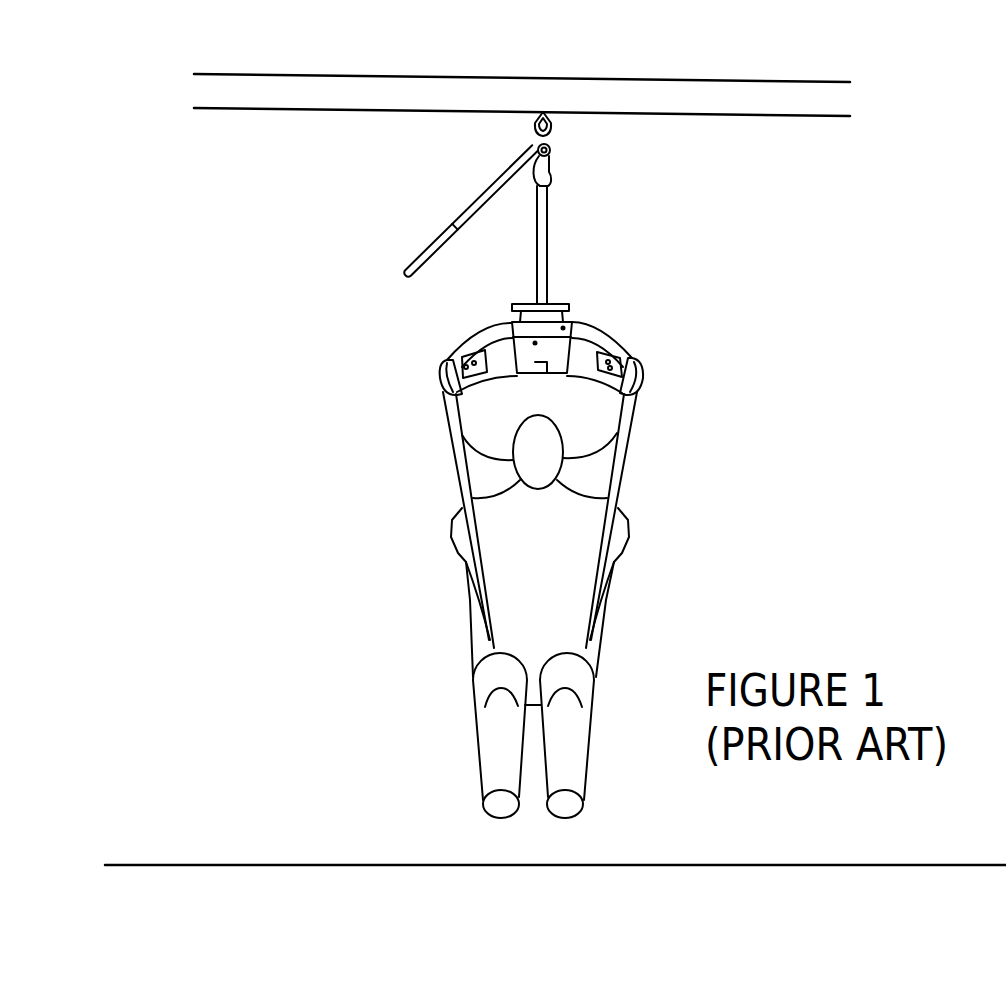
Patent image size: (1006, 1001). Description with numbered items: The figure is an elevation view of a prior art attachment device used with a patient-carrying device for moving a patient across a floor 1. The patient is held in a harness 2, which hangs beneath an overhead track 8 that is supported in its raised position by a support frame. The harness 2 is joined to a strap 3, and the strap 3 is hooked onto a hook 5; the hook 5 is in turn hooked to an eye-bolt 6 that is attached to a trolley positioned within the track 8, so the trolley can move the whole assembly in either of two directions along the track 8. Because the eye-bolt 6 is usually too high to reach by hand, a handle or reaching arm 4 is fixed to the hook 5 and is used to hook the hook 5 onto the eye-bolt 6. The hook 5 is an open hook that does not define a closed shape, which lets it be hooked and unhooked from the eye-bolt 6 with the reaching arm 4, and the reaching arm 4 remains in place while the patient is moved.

The floor 1 is at (313, 865).
The harness 2 is at (612, 341).
The strap 3 is at (549, 238).
The reaching arm 4 is at (447, 229).
The hook 5 is at (552, 150).
The eye-bolt 6 is at (553, 124).
The track 8 is at (555, 78).